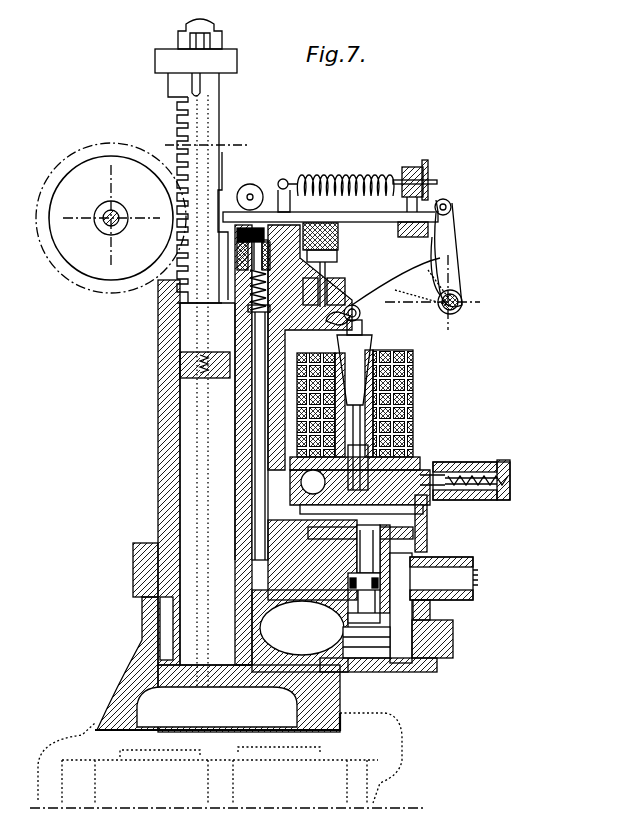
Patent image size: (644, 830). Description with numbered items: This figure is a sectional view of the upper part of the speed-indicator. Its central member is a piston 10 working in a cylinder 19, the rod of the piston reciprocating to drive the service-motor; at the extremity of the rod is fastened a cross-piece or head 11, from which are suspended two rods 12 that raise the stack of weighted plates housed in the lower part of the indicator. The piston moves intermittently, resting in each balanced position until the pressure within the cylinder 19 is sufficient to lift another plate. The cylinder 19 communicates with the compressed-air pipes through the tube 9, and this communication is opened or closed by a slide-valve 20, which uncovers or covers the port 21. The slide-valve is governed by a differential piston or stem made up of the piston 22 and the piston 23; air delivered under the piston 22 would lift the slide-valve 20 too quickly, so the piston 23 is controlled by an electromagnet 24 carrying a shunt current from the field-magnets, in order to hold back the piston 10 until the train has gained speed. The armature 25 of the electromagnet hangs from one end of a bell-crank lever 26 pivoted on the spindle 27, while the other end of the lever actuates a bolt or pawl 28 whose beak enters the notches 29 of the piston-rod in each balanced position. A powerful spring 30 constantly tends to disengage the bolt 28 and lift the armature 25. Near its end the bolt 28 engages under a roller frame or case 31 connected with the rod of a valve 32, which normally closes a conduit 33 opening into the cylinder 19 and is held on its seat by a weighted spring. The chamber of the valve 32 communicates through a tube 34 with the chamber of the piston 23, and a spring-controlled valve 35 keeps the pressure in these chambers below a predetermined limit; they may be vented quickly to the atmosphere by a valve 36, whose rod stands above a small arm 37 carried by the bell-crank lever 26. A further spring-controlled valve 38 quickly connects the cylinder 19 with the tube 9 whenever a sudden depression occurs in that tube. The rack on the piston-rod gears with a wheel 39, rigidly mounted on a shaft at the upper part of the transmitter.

The tube 9 is at (444, 588).
The piston 10 is at (106, 214).
The cross-piece or head 11 is at (178, 58).
The rods 12 is at (192, 88).
The cylinder 19 is at (172, 456).
The slide-valve 20 is at (346, 640).
The port 21 is at (347, 600).
The differential piston 22 is at (364, 598).
The piston 23 is at (428, 513).
The electromagnet 24 is at (413, 392).
The armature 25 is at (360, 355).
The bell-crank lever 26 is at (452, 280).
The spindle 27 is at (448, 313).
The bolt or pawl 28 is at (356, 214).
The notches 29 is at (218, 188).
The spring 30 is at (332, 170).
The roller frame or case 31 is at (252, 196).
The valve 32 is at (271, 306).
The conduit 33 is at (259, 400).
The tube 34 is at (282, 372).
The spring-controlled valve 35 is at (432, 468).
The valve 36 is at (343, 255).
The small arm 37 is at (338, 311).
The spring-controlled valve 38 is at (373, 672).
The wheel 39 is at (118, 292).